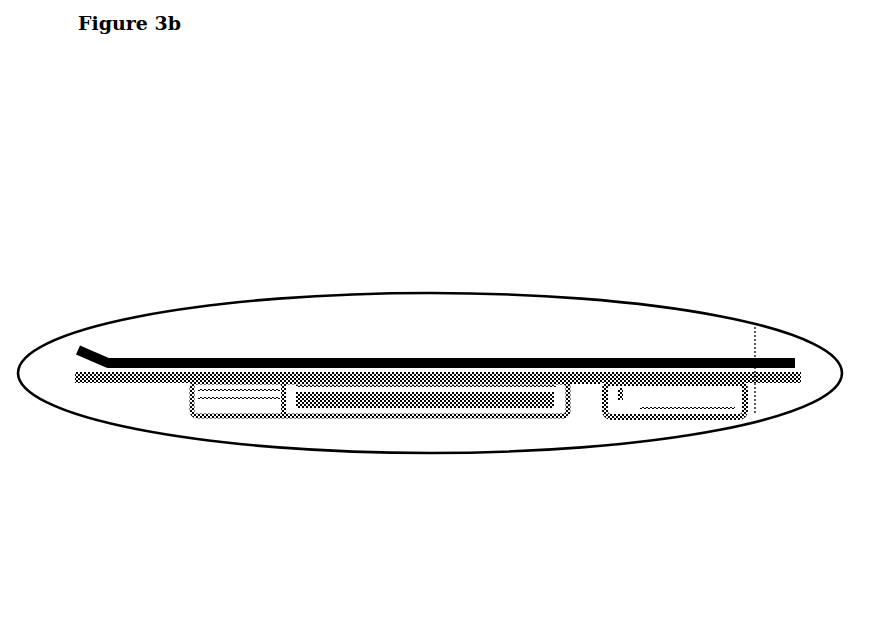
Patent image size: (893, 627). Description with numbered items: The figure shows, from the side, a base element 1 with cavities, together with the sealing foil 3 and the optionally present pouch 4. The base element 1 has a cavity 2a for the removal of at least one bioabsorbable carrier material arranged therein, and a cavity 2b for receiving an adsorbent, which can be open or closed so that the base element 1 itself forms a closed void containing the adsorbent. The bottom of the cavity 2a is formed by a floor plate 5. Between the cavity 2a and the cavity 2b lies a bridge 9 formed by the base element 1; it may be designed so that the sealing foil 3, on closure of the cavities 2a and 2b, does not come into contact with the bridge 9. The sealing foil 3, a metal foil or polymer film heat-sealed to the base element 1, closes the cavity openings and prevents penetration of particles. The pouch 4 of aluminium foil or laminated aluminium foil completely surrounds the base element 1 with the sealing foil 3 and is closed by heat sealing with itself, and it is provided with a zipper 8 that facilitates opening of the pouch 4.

The base element 1 is at (158, 373).
The cavity 2a is at (393, 393).
The cavity 2b is at (675, 394).
The sealing foil 3 is at (247, 359).
The pouch 4 is at (577, 295).
The floor plate of the cavity 5 is at (280, 390).
The zipper 8 is at (756, 396).
The bridge 9 is at (585, 388).